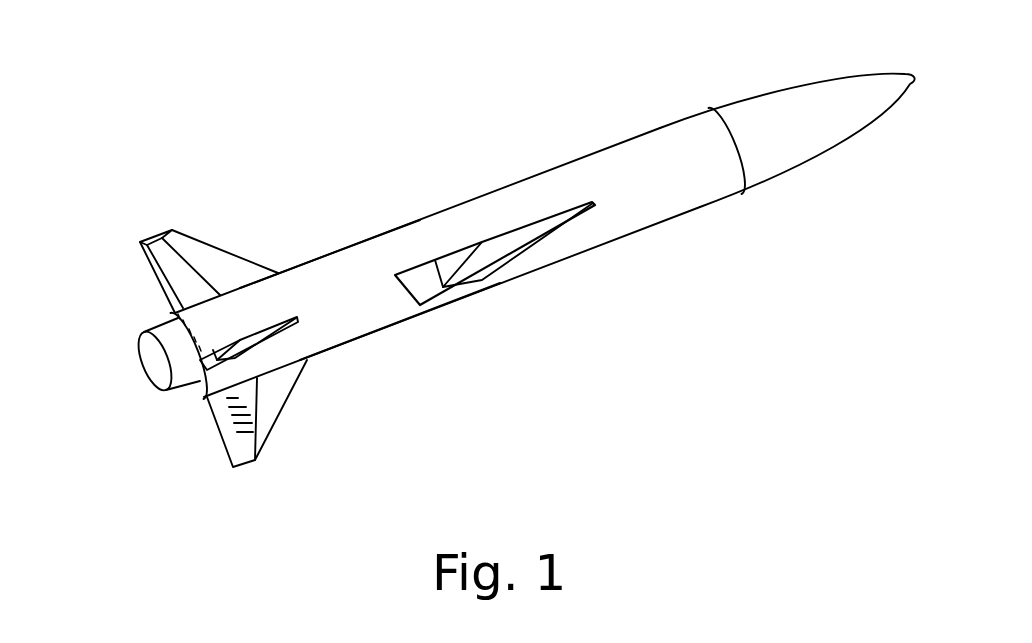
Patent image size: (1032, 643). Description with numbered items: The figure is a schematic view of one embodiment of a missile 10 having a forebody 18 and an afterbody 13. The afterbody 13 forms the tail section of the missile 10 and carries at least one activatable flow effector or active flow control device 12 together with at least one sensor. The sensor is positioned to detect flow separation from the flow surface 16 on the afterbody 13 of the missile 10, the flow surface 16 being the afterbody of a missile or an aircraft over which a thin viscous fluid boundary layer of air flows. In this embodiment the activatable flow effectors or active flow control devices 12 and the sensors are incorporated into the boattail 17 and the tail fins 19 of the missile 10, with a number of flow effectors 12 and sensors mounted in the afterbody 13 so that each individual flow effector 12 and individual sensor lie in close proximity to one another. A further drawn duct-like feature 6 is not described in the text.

The missile 10 is at (518, 197).
The forebody 18 is at (773, 110).
The afterbody 13 is at (377, 315).
The flow surface 16 is at (275, 298).
The upper air inlet duct 6 is at (530, 245).
The tail fins 19 is at (280, 328).
The activatable flow effector 12 is at (178, 396).
The boattail 17 is at (165, 333).